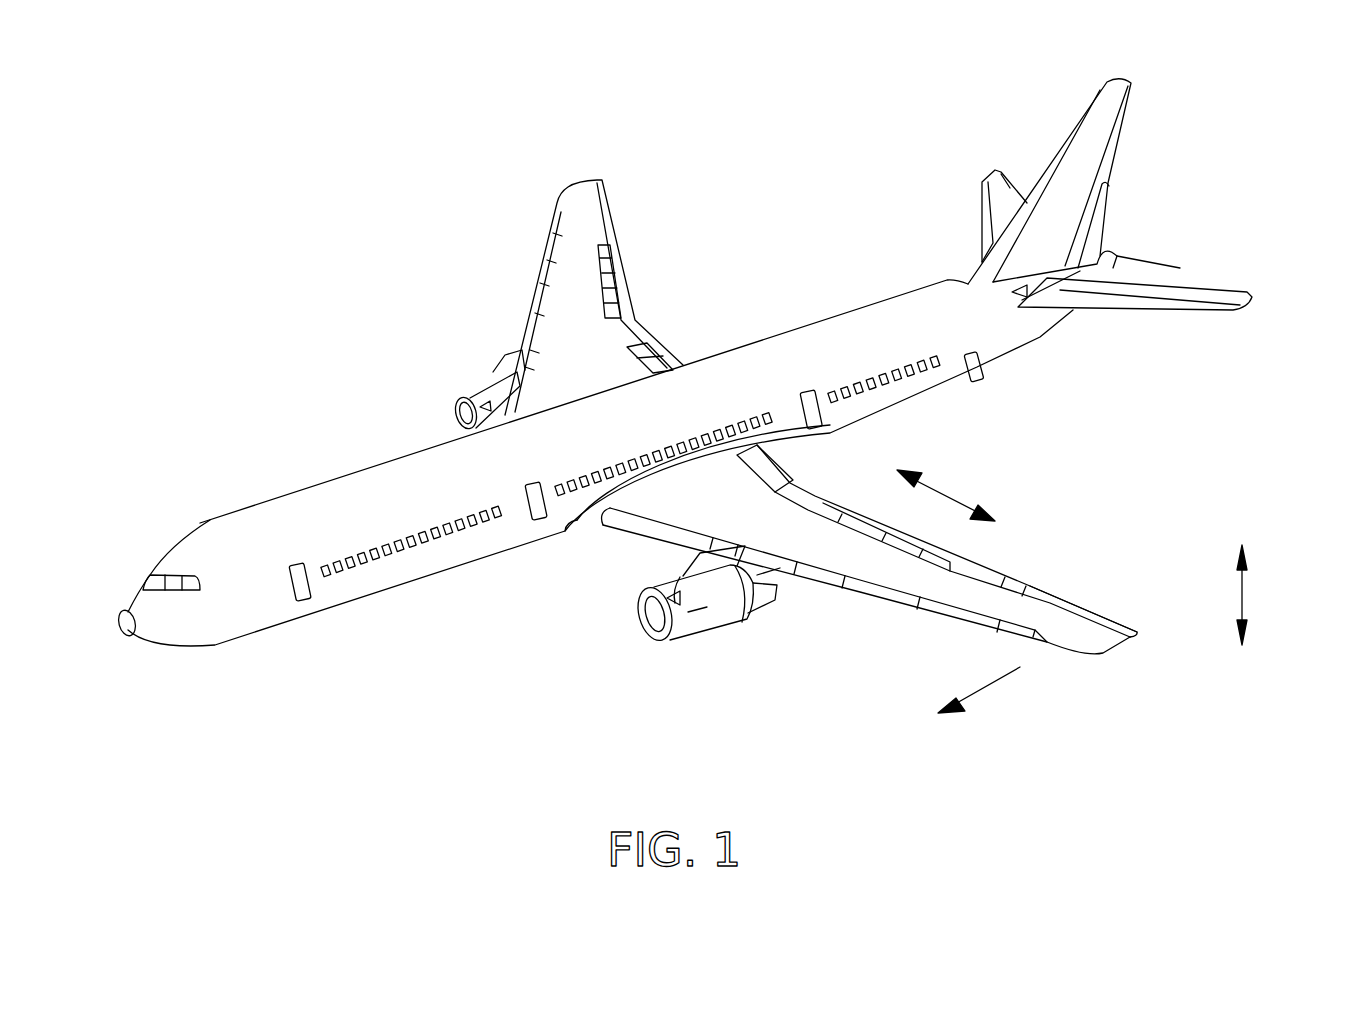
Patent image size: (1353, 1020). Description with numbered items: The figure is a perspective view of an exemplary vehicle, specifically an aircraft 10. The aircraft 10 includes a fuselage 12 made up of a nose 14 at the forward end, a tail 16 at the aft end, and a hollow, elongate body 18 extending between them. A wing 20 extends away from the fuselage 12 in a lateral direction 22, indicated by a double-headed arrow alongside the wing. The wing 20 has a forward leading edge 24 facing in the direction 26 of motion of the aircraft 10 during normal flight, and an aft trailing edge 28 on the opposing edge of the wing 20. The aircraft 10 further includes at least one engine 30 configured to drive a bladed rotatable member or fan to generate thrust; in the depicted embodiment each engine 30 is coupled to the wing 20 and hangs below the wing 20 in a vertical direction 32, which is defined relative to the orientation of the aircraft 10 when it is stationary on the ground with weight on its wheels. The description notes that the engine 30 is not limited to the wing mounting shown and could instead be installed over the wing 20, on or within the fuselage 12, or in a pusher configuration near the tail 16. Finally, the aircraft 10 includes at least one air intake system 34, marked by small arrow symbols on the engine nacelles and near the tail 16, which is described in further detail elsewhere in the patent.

The aircraft 10 is at (400, 272).
The fuselage 12 is at (717, 370).
The nose 14 is at (192, 552).
The tail 16 is at (1030, 352).
The hollow, elongate body 18 is at (371, 516).
The wing 20 is at (848, 574).
The lateral direction 22 is at (947, 487).
The forward leading edge 24 is at (1040, 642).
The direction of motion 26 is at (990, 682).
The aft trailing edge 28 is at (1060, 597).
The engine 30 is at (467, 390).
The vertical direction 32 is at (1244, 591).
The air intake system 34 is at (1030, 290).